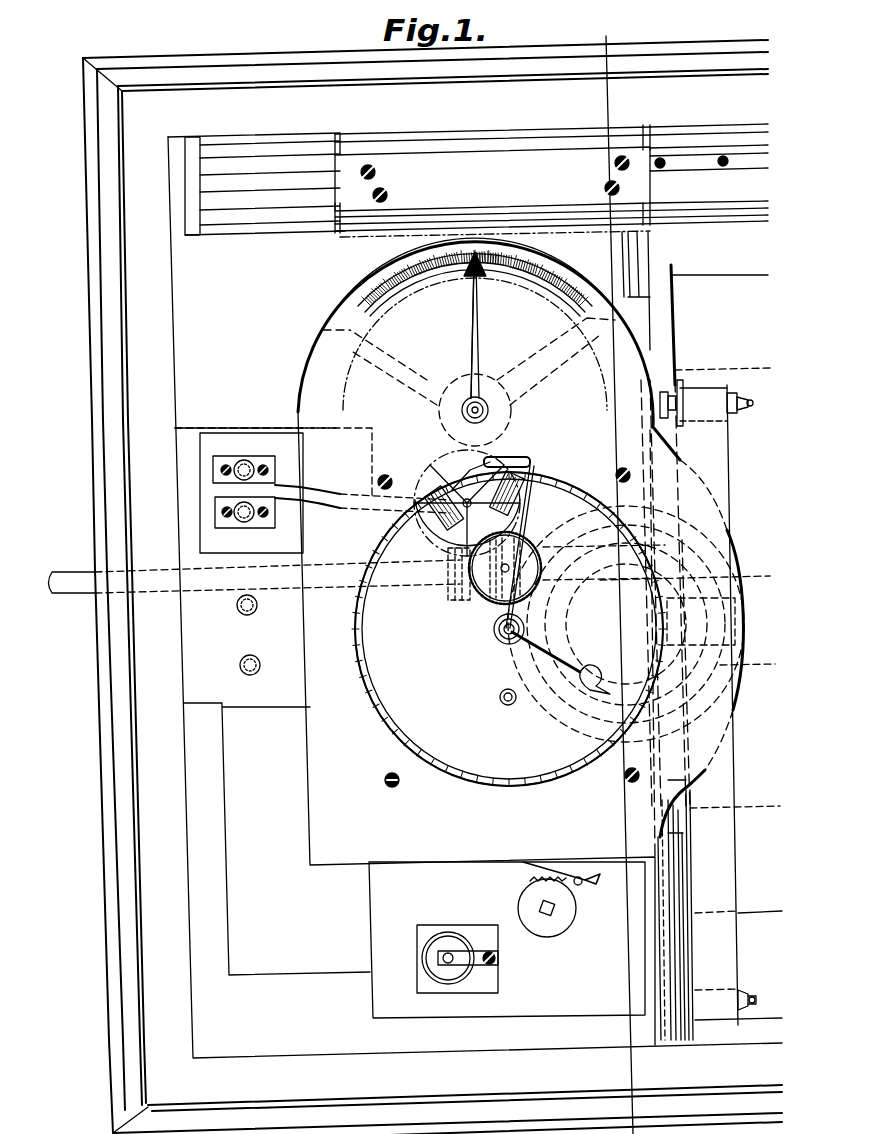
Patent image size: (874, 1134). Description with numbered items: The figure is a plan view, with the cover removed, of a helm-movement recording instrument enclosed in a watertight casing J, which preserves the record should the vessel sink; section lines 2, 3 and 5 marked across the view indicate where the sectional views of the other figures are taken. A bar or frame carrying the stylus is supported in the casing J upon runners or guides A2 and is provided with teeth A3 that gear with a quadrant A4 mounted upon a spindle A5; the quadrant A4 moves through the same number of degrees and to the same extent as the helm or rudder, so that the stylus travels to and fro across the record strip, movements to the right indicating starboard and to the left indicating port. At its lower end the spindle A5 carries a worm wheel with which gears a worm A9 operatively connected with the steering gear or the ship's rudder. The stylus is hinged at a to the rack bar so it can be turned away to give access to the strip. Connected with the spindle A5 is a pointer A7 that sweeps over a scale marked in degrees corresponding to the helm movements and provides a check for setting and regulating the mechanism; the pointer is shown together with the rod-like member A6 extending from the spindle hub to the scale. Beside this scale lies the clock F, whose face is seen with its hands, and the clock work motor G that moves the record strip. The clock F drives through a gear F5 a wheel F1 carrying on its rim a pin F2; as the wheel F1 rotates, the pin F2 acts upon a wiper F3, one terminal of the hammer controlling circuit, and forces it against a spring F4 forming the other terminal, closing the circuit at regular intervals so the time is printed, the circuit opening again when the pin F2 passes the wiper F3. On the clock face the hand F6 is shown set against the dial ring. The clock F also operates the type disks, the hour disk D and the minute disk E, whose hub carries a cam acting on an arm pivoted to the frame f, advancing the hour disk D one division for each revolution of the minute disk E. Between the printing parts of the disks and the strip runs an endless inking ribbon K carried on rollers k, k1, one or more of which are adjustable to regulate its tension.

The watertight casing J is at (90, 281).
The section line 3— 3 is at (160, 141).
The section line 5 is at (606, 28).
The hinge a is at (718, 150).
The section line 2— 2 is at (48, 583).
The runners or guides A2 is at (262, 218).
The teeth A3 is at (415, 235).
The quadrant A4 is at (352, 284).
The spindle A5 is at (488, 411).
The pendulum rod A6 is at (474, 318).
The pointer A7 is at (420, 280).
The worm A9 is at (466, 601).
The clock F is at (509, 627).
The wheel F1 is at (468, 462).
The pin F2 is at (458, 470).
The wiper F3 is at (331, 478).
The spring F4 is at (332, 519).
The gear F5 is at (541, 536).
The hour hand F6 is at (590, 663).
The frame f is at (509, 644).
The clock work motor G is at (507, 940).
The hour disk D is at (725, 540).
The minute disk E is at (687, 614).
The endless inking ribbon K is at (735, 946).
The roller k is at (748, 1000).
The roller k1 is at (740, 405).